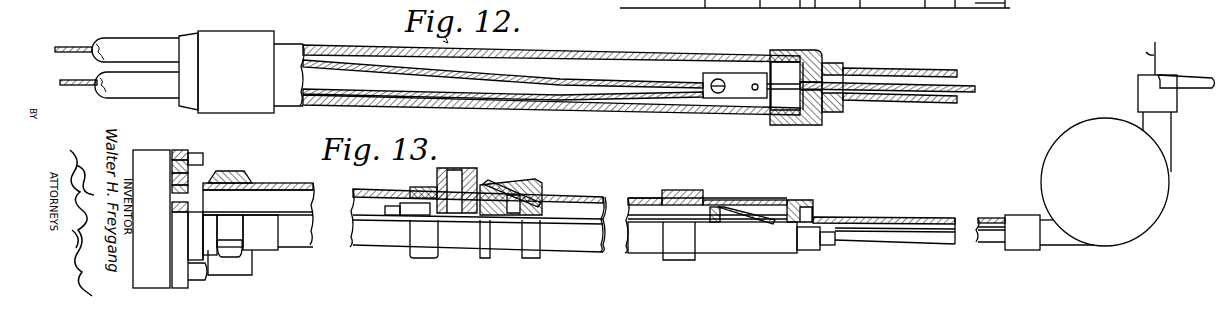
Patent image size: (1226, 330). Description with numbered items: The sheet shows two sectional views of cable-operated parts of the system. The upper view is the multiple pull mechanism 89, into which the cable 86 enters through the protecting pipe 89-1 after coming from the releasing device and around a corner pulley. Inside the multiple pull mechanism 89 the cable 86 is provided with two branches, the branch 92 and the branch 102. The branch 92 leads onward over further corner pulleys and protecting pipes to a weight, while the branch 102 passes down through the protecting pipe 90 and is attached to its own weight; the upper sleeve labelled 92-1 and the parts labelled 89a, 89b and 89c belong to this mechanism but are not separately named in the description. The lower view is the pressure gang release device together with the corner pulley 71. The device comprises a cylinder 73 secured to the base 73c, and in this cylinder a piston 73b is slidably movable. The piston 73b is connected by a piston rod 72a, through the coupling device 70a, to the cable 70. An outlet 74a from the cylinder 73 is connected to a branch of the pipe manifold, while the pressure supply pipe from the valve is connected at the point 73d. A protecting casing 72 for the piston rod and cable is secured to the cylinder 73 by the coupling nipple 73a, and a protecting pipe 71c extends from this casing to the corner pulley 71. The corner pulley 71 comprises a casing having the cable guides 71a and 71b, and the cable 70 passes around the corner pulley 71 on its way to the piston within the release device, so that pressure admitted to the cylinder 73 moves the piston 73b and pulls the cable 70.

In FIG. 12, the branch 92 is at (71, 47).
In FIG. 12, the cable sleeve 92-1 is at (152, 42).
In FIG. 12, the branch 102 is at (73, 86).
In FIG. 12, the protecting pipe 90 is at (138, 90).
In FIG. 12, the terminal block 89c is at (258, 107).
In FIG. 12, the multiple pull mechanism 89 is at (692, 107).
In FIG. 12, the clamp block 89b is at (743, 77).
In FIG. 12, the bushing 89a is at (822, 126).
In FIG. 12, the protecting pipe 89-1 is at (952, 72).
In FIG. 12, the cable 86 is at (969, 94).
In FIG. 13, the base 73c is at (202, 182).
In FIG. 13, the outlet 74a is at (247, 263).
In FIG. 13, the cylinder 73 is at (380, 246).
In FIG. 13, the piston 73b is at (407, 194).
In FIG. 13, the pressure supply connection point 73d is at (468, 173).
In FIG. 13, the coupling nipple 73a is at (527, 185).
In FIG. 13, the protecting casing 72 is at (743, 248).
In FIG. 13, the piston rod 72a is at (617, 196).
In FIG. 13, the coupling device 70a is at (745, 208).
In FIG. 13, the cable 70 is at (787, 199).
In FIG. 13, the protecting pipe 71c is at (909, 240).
In FIG. 13, the cable guide 71b is at (1053, 243).
In FIG. 13, the corner pulley 71 is at (1128, 243).
In FIG. 13, the cable guide 71a is at (1170, 127).